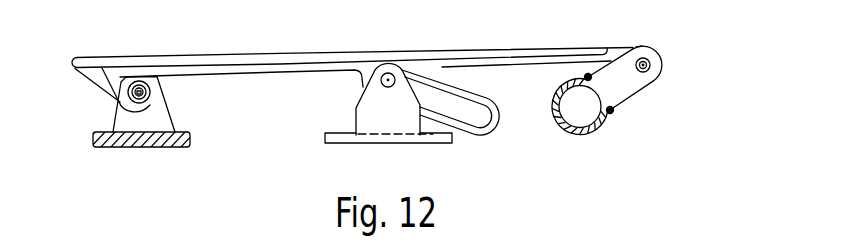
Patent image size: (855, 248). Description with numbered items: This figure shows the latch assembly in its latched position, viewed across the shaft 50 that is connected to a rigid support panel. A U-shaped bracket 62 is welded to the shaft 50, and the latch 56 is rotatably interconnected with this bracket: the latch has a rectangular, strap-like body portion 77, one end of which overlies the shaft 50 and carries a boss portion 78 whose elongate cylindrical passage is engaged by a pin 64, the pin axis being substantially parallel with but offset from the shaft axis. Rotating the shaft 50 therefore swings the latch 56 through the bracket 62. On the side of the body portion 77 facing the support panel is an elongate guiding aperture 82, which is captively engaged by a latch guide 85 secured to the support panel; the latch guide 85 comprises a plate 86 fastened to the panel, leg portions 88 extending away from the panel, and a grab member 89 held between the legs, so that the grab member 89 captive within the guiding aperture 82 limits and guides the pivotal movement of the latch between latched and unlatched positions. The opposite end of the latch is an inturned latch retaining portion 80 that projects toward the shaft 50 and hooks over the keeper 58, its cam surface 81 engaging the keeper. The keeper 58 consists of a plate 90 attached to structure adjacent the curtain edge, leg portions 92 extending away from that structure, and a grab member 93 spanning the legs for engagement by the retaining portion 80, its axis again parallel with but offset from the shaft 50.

The shaft 50 is at (577, 134).
The upper latch 56 is at (390, 94).
The upper keeper 58 is at (126, 117).
The upper U-shaped bracket 62 is at (627, 85).
The pin 64 is at (651, 63).
The body portion 77 is at (268, 53).
The boss portion 78 is at (638, 47).
The latch retaining portion 80 is at (118, 88).
The cam surface 81 is at (118, 102).
The guiding aperture 82 is at (463, 114).
The latch guide 85 is at (372, 102).
The plate 86 is at (345, 143).
The leg portions 88 is at (363, 108).
The grab member 89 is at (393, 75).
The plate 90 is at (125, 148).
The leg portions 92 is at (162, 115).
The grab member 93 is at (142, 88).